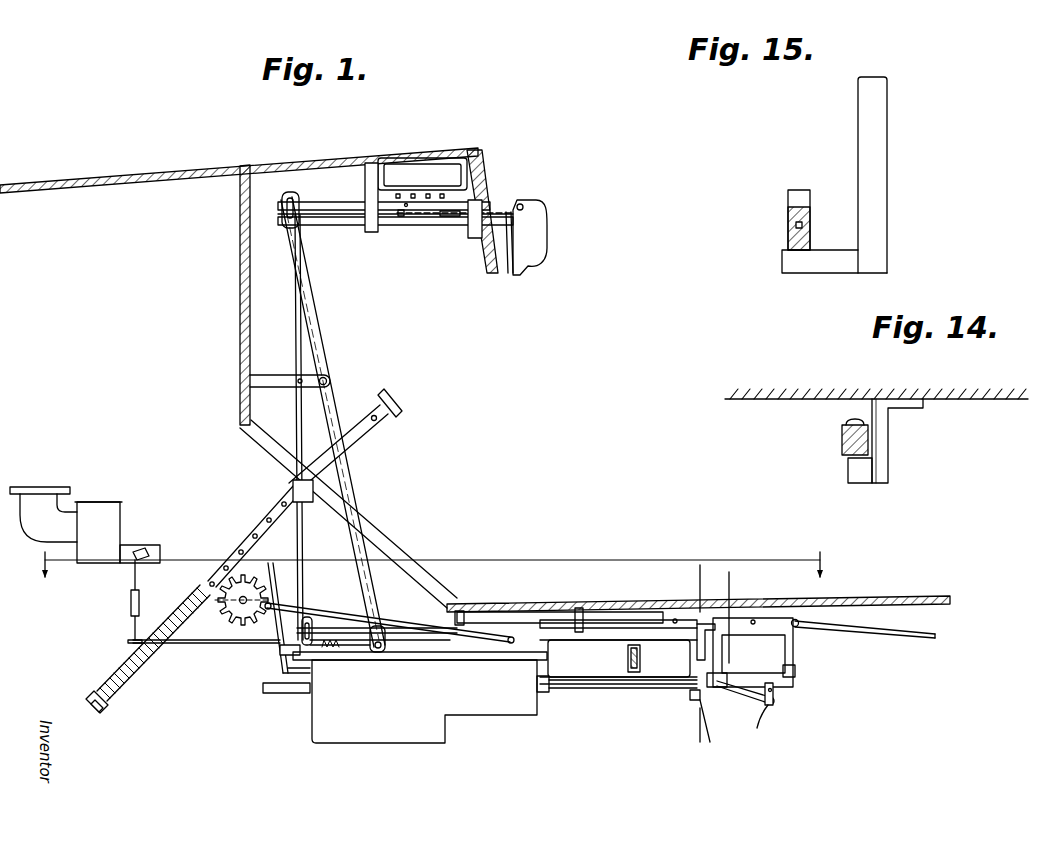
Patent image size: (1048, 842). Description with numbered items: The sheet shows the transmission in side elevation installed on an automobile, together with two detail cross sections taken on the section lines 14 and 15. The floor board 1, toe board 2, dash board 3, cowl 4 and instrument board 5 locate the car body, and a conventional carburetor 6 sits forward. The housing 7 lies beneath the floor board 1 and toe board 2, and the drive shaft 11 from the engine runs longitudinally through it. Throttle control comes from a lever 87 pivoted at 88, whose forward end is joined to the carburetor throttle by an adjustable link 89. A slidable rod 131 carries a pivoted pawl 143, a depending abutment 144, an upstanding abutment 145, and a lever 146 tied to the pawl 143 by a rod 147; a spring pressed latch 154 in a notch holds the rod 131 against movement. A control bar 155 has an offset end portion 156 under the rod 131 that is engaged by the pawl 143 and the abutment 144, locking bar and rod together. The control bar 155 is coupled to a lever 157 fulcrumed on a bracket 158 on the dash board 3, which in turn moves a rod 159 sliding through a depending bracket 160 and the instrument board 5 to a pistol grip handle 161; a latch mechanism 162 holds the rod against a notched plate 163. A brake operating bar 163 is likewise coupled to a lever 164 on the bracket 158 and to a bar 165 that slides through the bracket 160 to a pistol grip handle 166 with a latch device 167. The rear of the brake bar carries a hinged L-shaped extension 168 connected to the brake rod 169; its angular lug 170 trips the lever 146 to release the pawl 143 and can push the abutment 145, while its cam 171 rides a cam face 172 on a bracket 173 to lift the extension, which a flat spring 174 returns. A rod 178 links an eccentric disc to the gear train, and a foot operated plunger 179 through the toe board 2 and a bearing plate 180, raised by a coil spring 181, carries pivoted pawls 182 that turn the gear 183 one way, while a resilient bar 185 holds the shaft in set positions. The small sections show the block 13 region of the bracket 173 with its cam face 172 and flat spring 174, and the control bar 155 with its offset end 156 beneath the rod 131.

In FIG. 1, the floor board 1 is at (503, 605).
In FIG. 1, the toe board 2 is at (385, 545).
In FIG. 1, the dash board 3 is at (240, 288).
In FIG. 1, the cowl 4 is at (338, 162).
In FIG. 1, the instrument board 5 is at (488, 182).
In FIG. 1, the carburetor 6 is at (95, 510).
In FIG. 1, the housing 7 is at (320, 720).
In FIG. 1, the drive shaft 11 is at (265, 688).
In FIG. 1, the block 13 is at (712, 673).
In FIG. 1, the section line 14— 14 is at (719, 588).
In FIG. 1, the section line 15— 15 is at (699, 588).
In FIG. 1, the lever 87 is at (184, 644).
In FIG. 1, the pivot 88 is at (283, 652).
In FIG. 1, the adjustable link 89 is at (131, 580).
In FIG. 1, the slidable rod 131 is at (566, 690).
In FIG. 15, the slidable rod 131 is at (787, 237).
In FIG. 1, the pawl 143 is at (714, 732).
In FIG. 1, the abutment 144 is at (692, 681).
In FIG. 1, the upstanding abutment 145 is at (796, 670).
In FIG. 1, the lever 146 is at (775, 698).
In FIG. 1, the rod 147 is at (760, 724).
In FIG. 1, the spring pressed latch 154 is at (628, 670).
In FIG. 1, the control bar 155 is at (596, 636).
In FIG. 15, the control bar 155 is at (875, 95).
In FIG. 1, the offset end portion 156 is at (692, 696).
In FIG. 15, the offset end portion 156 is at (829, 266).
In FIG. 1, the lever 157 is at (340, 397).
In FIG. 1, the bracket 158 is at (272, 378).
In FIG. 1, the rod 159 is at (318, 202).
In FIG. 1, the depending bracket 160 is at (373, 233).
In FIG. 1, the pistol grip handle 161 is at (548, 243).
In FIG. 1, the latch mechanism 162 is at (440, 218).
In FIG. 1, the notched plate / brake operating bar 163 is at (400, 186).
In FIG. 1, the lever 164 is at (303, 334).
In FIG. 1, the bar 165 is at (345, 225).
In FIG. 1, the pistol grip handle 166 is at (511, 275).
In FIG. 1, the latch device 167 is at (476, 240).
In FIG. 1, the L-shaped extension 168 is at (795, 652).
In FIG. 14, the L-shaped extension 168 is at (841, 443).
In FIG. 1, the brake rod 169 is at (906, 637).
In FIG. 1, the angular lug 170 is at (790, 678).
In FIG. 1, the cam 171 is at (770, 620).
In FIG. 14, the cam face 172 is at (848, 473).
In FIG. 1, the bracket 173 is at (698, 644).
In FIG. 14, the bracket 173 is at (890, 432).
In FIG. 14, the flat spring 174 is at (845, 424).
In FIG. 1, the rod 178 is at (422, 627).
In FIG. 1, the foot operated plunger 179 is at (366, 432).
In FIG. 1, the bearing plate 180 is at (108, 706).
In FIG. 1, the coil spring 181 is at (125, 662).
In FIG. 1, the pivoted pawls 182 is at (258, 543).
In FIG. 1, the gear 183 is at (204, 597).
In FIG. 1, the resilient bar 185 is at (272, 585).